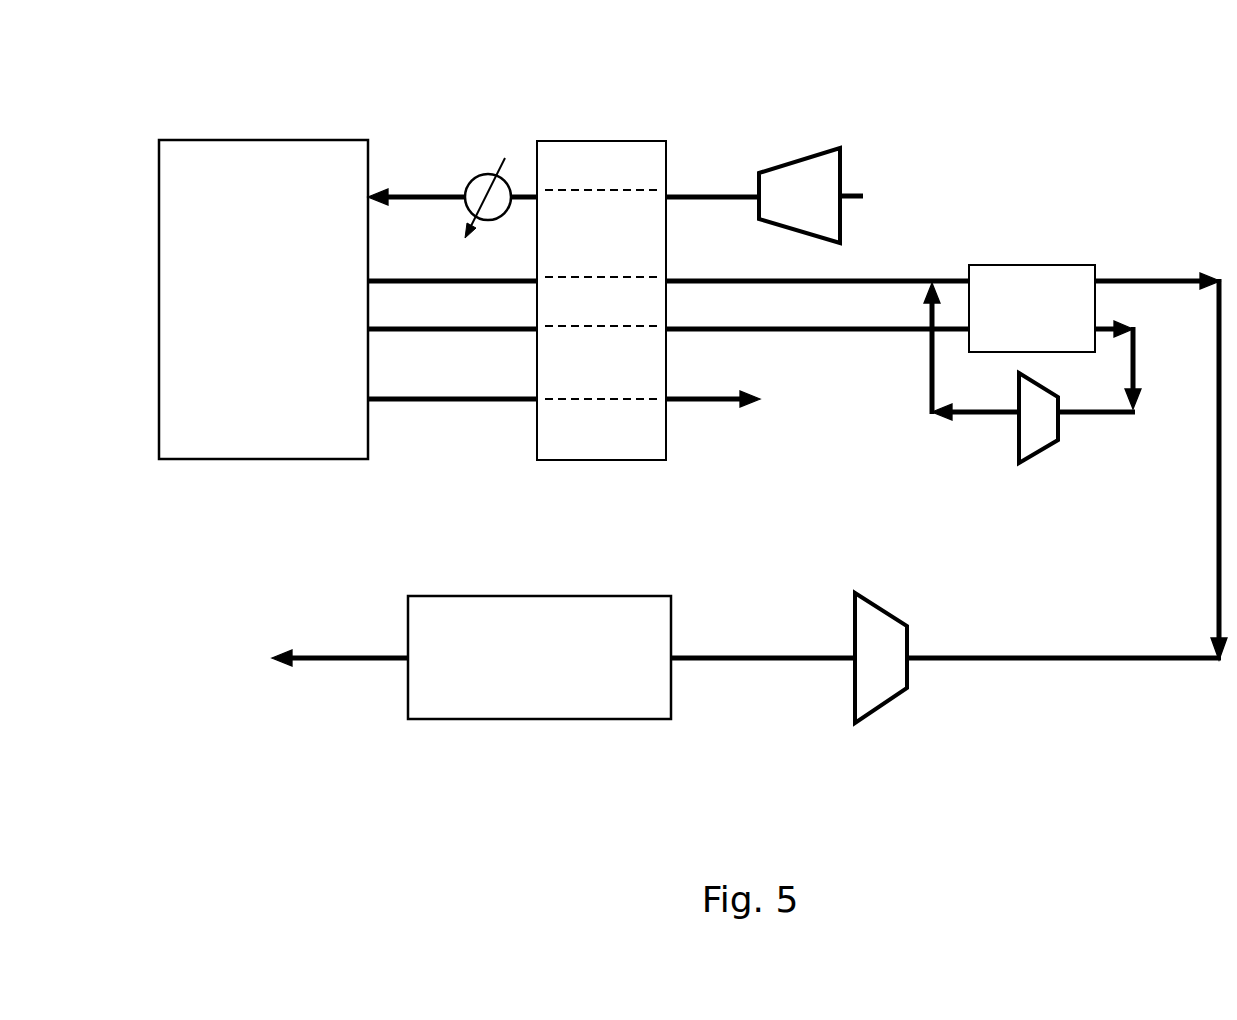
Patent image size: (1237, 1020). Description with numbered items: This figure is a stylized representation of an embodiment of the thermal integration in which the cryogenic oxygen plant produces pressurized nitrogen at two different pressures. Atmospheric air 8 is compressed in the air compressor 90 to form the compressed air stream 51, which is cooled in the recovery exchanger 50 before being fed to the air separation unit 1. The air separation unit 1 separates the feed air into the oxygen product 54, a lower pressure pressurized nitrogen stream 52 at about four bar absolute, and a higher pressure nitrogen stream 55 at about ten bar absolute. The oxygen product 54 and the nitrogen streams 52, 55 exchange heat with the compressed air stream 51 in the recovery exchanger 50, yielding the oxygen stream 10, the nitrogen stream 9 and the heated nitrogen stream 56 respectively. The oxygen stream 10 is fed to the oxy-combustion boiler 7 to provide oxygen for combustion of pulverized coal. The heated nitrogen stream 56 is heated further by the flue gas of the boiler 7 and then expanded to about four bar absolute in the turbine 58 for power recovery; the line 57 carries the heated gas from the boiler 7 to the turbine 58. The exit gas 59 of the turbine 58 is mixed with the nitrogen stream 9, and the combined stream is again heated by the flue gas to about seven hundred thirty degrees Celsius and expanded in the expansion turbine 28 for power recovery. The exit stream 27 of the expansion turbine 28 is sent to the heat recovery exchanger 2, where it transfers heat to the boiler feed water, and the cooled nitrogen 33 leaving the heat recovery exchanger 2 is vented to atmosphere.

The air separation unit 1 is at (247, 435).
The heat recovery exchanger 2 is at (572, 693).
The oxy-combustion boiler 7 is at (1045, 292).
The atmospheric air 8 is at (857, 190).
The nitrogen stream 9 is at (870, 275).
The oxygen stream 10 is at (712, 403).
The exit stream 27 is at (780, 663).
The expansion turbine 28 is at (868, 633).
The cooled nitrogen 33 is at (367, 660).
The recovery exchanger 50 is at (597, 167).
The compressed air stream 51 is at (707, 190).
The pressurized nitrogen stream 52 is at (447, 278).
The oxygen product 54 is at (482, 402).
The nitrogen stream 55 is at (463, 333).
The heated nitrogen stream 56 is at (785, 332).
The recycle line 57 is at (1137, 372).
The turbine 58 is at (1032, 423).
The exit gas 59 is at (928, 370).
The air compressor 90 is at (808, 178).